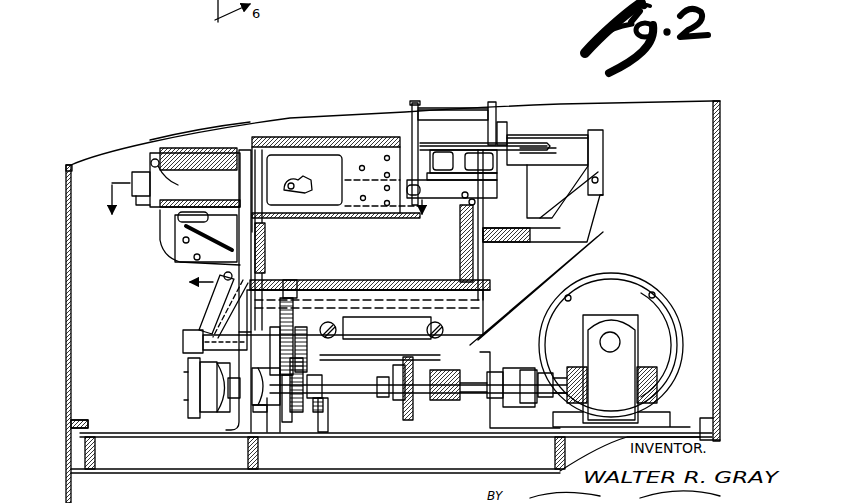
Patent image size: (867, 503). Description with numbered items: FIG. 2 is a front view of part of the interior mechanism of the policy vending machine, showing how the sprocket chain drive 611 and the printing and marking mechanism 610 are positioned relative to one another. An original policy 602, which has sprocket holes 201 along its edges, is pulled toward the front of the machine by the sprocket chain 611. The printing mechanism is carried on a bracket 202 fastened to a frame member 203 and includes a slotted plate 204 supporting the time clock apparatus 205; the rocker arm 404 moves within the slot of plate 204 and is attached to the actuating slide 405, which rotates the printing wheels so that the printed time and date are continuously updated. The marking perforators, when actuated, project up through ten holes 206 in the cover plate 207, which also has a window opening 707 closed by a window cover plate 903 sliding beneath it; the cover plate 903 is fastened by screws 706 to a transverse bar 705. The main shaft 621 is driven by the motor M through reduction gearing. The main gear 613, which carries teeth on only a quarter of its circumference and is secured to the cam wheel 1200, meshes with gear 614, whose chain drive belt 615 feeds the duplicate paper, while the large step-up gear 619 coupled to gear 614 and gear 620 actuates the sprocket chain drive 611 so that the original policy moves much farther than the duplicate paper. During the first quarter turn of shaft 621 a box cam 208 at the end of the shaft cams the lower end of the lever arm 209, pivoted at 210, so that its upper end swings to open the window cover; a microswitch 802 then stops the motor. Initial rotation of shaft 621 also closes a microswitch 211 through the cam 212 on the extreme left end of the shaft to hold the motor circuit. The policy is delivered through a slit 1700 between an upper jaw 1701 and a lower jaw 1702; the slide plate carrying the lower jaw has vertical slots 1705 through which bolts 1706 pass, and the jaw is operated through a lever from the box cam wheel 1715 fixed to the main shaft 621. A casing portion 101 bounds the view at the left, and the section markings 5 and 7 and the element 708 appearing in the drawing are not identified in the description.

The housing wall 101 is at (66, 333).
The window opening 707 is at (297, 160).
The cover plate 207 is at (338, 214).
The original policy 602 is at (434, 228).
The holes 206 is at (376, 150).
The section line 5 is at (304, 180).
The transverse bar 705 is at (162, 210).
The screws 706 is at (151, 163).
The window cover plate 903 is at (170, 167).
The section line 7 is at (267, 197).
The microswitch 802 is at (160, 215).
The actuating lever arm 209 is at (205, 310).
The pivot 210 is at (205, 322).
The microswitch 211 is at (183, 342).
The cam 212 is at (188, 382).
The box cam 208 is at (200, 388).
The gear 620 is at (288, 292).
The bolts 1706 is at (350, 288).
The upper jaw 1701 is at (315, 300).
The slit 1700 is at (388, 300).
The lower jaw 1702 is at (387, 328).
The vertical slots 1705 is at (332, 338).
The gear 614 is at (307, 368).
The gear 619 is at (265, 383).
The positive chain drive belt 615 is at (250, 430).
The main gear 613 is at (300, 430).
The main shaft 621 is at (400, 400).
The bearing 708 is at (398, 400).
The box cam wheel 1715 is at (406, 410).
The cam wheel 1200 is at (325, 435).
The rocker arm 404 is at (480, 132).
The actuating slide 405 is at (445, 158).
The printing and marking mechanism 610 is at (518, 130).
The slotted plate 204 is at (560, 140).
The time clock apparatus 205 is at (603, 165).
The sprocket holes 201 is at (476, 205).
The bracket 202 is at (590, 222).
The sprocket chain drive 611 is at (472, 258).
The frame member 203 is at (492, 360).
The motor M is at (622, 290).